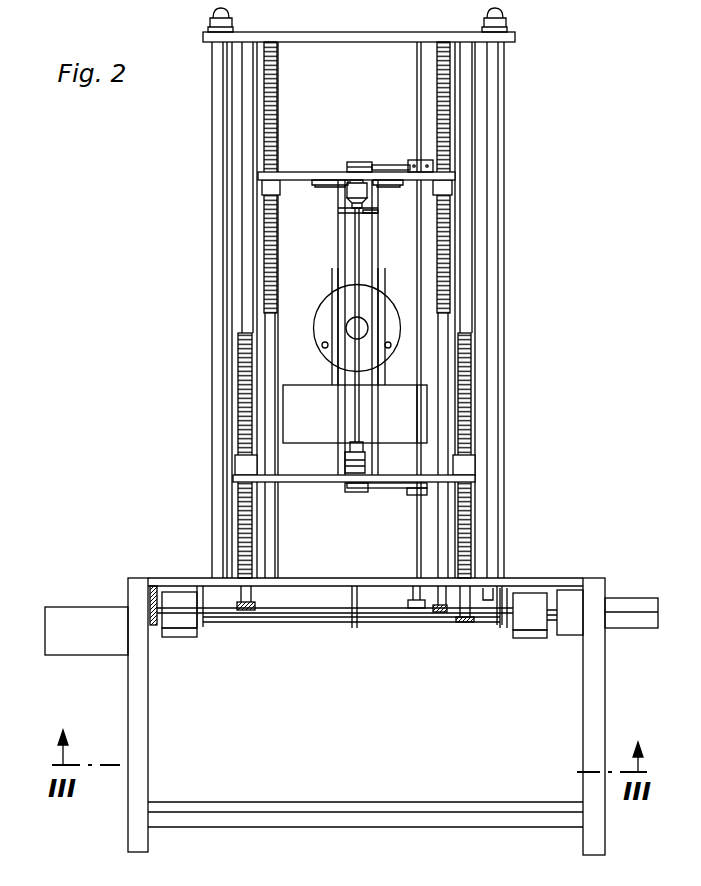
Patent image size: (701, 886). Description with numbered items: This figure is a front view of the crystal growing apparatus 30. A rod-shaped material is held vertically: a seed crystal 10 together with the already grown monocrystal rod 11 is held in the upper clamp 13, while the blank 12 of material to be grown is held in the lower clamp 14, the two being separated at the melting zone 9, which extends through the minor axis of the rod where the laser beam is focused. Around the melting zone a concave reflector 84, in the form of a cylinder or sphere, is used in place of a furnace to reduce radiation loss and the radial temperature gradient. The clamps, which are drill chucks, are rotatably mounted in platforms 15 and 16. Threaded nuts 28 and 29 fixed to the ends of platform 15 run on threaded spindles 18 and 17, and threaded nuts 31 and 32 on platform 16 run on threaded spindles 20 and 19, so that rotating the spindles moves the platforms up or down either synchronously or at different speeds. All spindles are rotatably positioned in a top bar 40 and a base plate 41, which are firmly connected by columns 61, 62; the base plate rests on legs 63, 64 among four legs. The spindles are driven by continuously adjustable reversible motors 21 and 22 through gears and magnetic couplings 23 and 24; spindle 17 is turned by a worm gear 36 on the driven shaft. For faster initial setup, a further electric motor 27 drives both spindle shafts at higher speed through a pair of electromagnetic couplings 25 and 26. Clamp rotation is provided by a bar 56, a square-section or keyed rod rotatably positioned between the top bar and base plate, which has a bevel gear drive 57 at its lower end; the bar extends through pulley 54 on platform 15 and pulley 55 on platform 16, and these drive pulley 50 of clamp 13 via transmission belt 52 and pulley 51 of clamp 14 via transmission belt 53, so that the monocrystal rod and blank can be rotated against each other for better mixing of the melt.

The melting zone 9 is at (354, 328).
The seed crystal 10 is at (378, 212).
The monocrystal rod 11 is at (359, 265).
The blank 12 is at (354, 378).
The clamp 13 is at (350, 187).
The clamp 14 is at (349, 446).
The platform 15 is at (455, 178).
The platform 16 is at (475, 479).
The threaded spindle 17 is at (437, 72).
The threaded spindle 18 is at (278, 75).
The threaded spindle 19 is at (468, 93).
The threaded spindle 20 is at (240, 288).
The reversible motor 21 is at (642, 605).
The reversible motor 22 is at (642, 620).
The magnetic coupling 23 is at (540, 600).
The magnetic coupling 24 is at (530, 638).
The electromagnetic coupling 25 is at (174, 597).
The electromagnetic coupling 26 is at (183, 637).
The electric motor 27 is at (63, 618).
The threaded nut 28 is at (262, 186).
The threaded nut 29 is at (452, 191).
The growing apparatus 30 is at (526, 577).
The threaded nut 31 is at (238, 464).
The threaded nut 32 is at (467, 465).
The worm gear 36 is at (437, 615).
The top bar 40 is at (515, 40).
The base plate 41 is at (312, 582).
The pulley 50 is at (352, 163).
The pulley 51 is at (346, 490).
The transmission belt 52 is at (378, 165).
The transmission belt 53 is at (385, 487).
The pulley 54 is at (417, 160).
The pulley 55 is at (420, 491).
The bar 56 is at (415, 552).
The bevel gear drive 57 is at (412, 608).
The column 61 is at (215, 403).
The column 62 is at (493, 298).
The leg 63 is at (136, 695).
The leg 64 is at (583, 726).
The concave reflector 84 is at (345, 245).